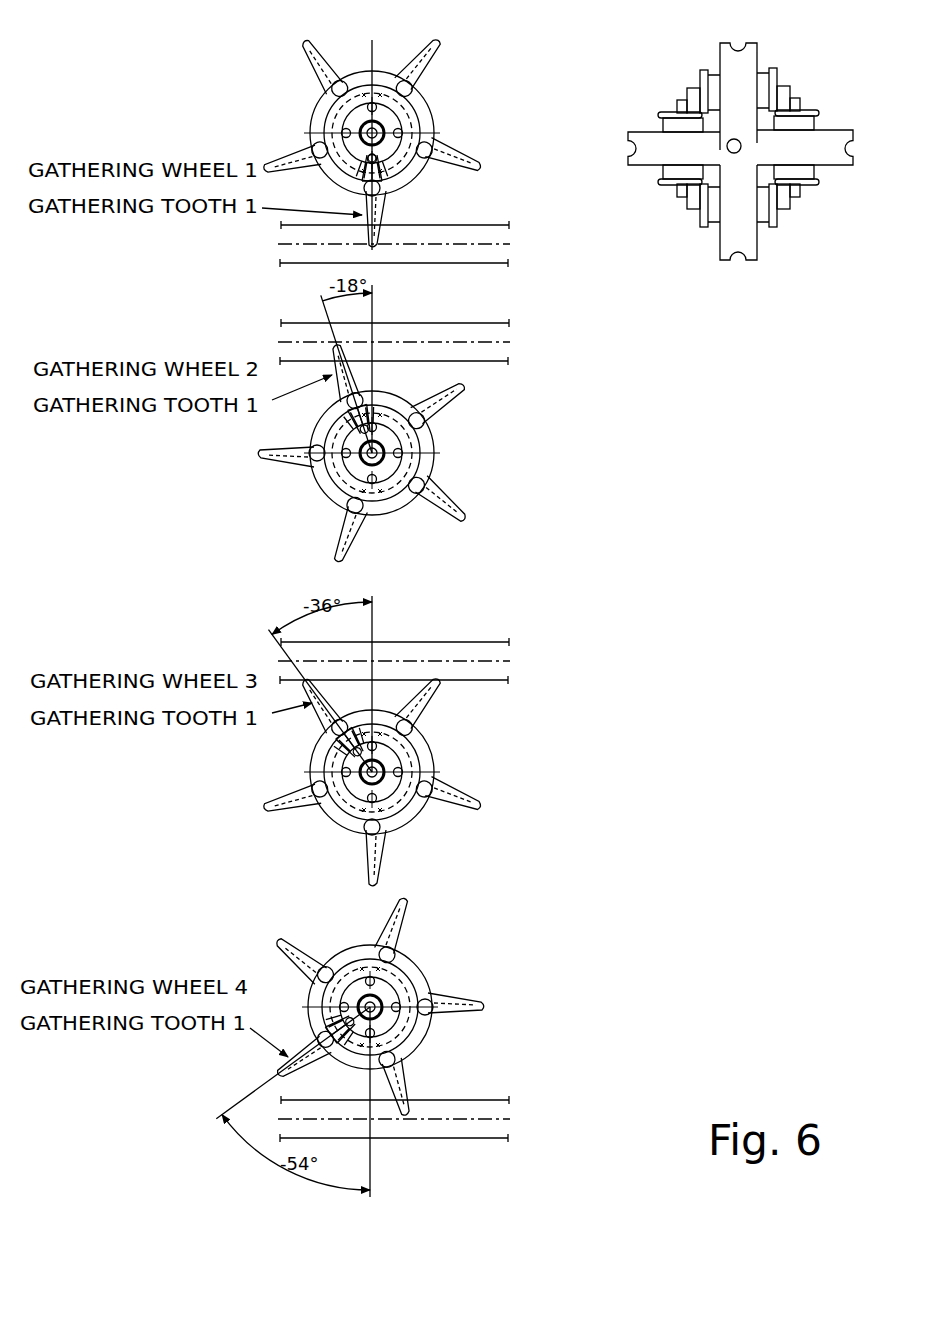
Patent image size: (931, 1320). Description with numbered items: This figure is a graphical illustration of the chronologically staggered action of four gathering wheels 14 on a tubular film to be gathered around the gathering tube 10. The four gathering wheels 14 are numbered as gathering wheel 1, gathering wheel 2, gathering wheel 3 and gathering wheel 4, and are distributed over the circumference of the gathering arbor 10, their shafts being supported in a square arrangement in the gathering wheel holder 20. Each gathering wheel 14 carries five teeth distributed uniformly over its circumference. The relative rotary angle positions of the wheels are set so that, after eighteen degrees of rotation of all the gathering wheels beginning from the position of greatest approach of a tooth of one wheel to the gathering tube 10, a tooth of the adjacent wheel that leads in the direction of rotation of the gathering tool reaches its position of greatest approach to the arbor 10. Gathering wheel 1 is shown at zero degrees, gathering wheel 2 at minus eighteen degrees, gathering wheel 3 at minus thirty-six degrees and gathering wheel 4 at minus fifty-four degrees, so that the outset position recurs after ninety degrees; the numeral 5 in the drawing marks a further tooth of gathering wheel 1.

The gathering wheel 1 is at (738, 81).
The gathering wheel 2 is at (490, 156).
The gathering wheel 3 is at (525, 169).
The gathering wheel 4 is at (636, 99).
The gathering tooth 5 is at (412, 222).
The gathering tube 10 is at (435, 255).
The gathering wheel 14 is at (572, 155).
The gathering wheel holder 20 is at (692, 193).